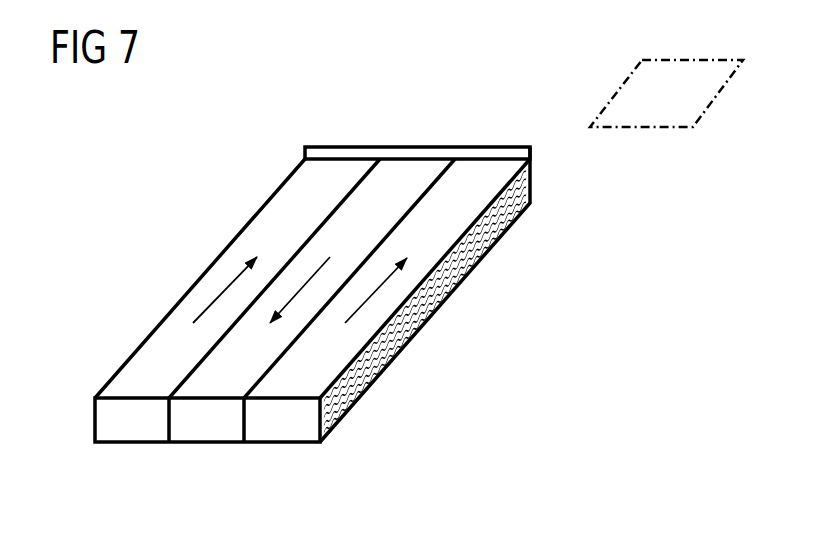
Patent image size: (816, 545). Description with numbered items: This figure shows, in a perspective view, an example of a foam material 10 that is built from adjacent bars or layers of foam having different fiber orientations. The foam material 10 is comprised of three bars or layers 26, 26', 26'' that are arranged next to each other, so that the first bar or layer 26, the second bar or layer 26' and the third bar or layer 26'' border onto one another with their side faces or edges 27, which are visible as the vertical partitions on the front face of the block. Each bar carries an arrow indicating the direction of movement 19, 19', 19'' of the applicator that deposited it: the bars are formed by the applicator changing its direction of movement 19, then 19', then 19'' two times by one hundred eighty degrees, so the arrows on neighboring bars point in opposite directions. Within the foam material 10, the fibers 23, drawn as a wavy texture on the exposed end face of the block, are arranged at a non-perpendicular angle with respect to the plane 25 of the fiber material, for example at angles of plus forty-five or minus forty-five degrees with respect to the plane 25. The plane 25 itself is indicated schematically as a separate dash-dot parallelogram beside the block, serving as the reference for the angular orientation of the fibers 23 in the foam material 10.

The foam material 10 is at (358, 145).
The direction of movement 19 is at (218, 268).
The direction of movement 19' is at (282, 240).
The direction of movement 19'' is at (416, 311).
The fibers 23 is at (443, 292).
The plane 25 is at (690, 75).
The bar or layer 26 is at (237, 254).
The bar or layer 26' is at (349, 236).
The bar or layer 26'' is at (425, 236).
The side faces or edges 27 is at (163, 436).